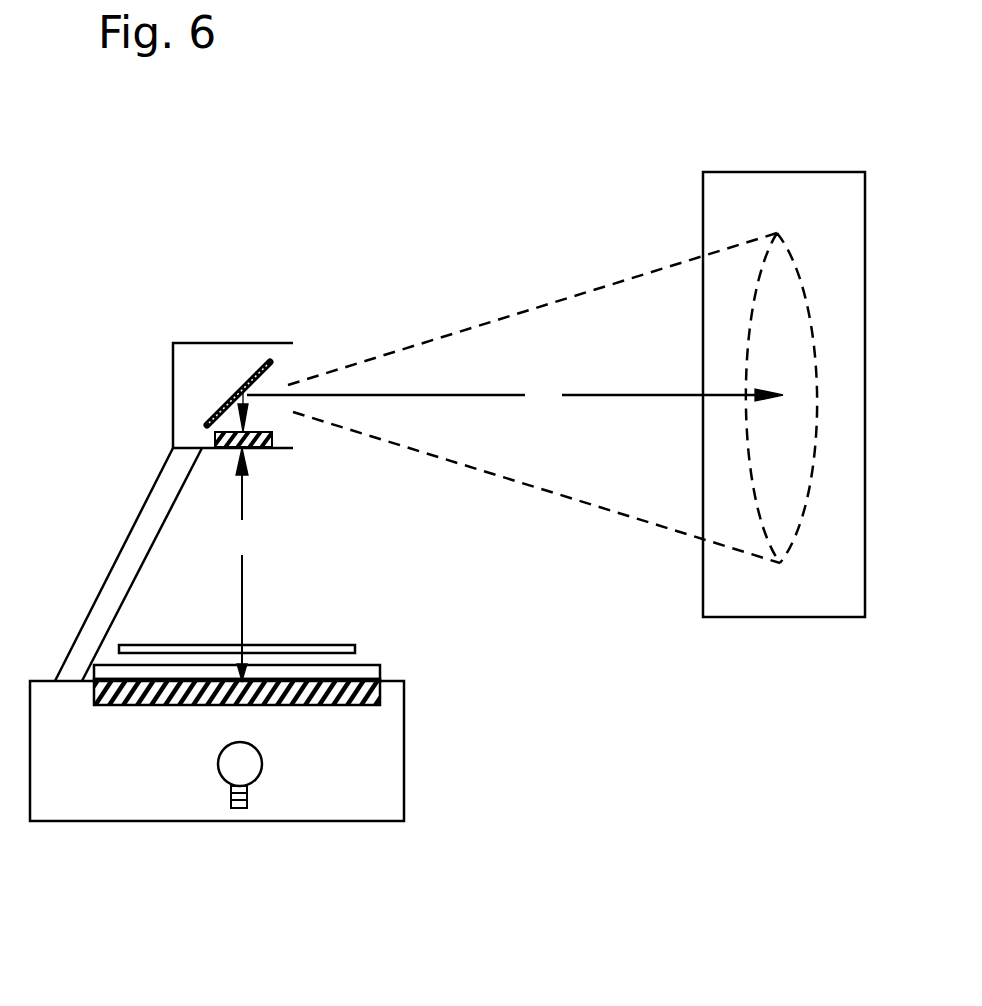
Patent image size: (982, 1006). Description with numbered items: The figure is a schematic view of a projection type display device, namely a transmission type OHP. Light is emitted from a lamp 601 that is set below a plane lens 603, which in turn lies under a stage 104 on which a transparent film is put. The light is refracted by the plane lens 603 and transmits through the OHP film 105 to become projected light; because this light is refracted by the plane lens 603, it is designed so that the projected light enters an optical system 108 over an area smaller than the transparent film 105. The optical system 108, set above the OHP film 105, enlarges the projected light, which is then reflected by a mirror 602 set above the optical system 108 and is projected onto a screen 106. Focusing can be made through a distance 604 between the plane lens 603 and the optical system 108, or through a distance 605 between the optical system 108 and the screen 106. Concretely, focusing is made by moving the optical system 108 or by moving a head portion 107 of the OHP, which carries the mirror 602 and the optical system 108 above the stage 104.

The screen 106 is at (810, 188).
The distance between the optical system and the screen 605 is at (535, 398).
The head portion 107 is at (173, 407).
The mirror 602 is at (260, 368).
The optical system 108 is at (266, 450).
The distance between the plane lens and the optical system 604 is at (241, 564).
The OHP film 105 is at (309, 648).
The stage 104 is at (370, 671).
The plane lens 603 is at (345, 697).
The lamp 601 is at (253, 785).